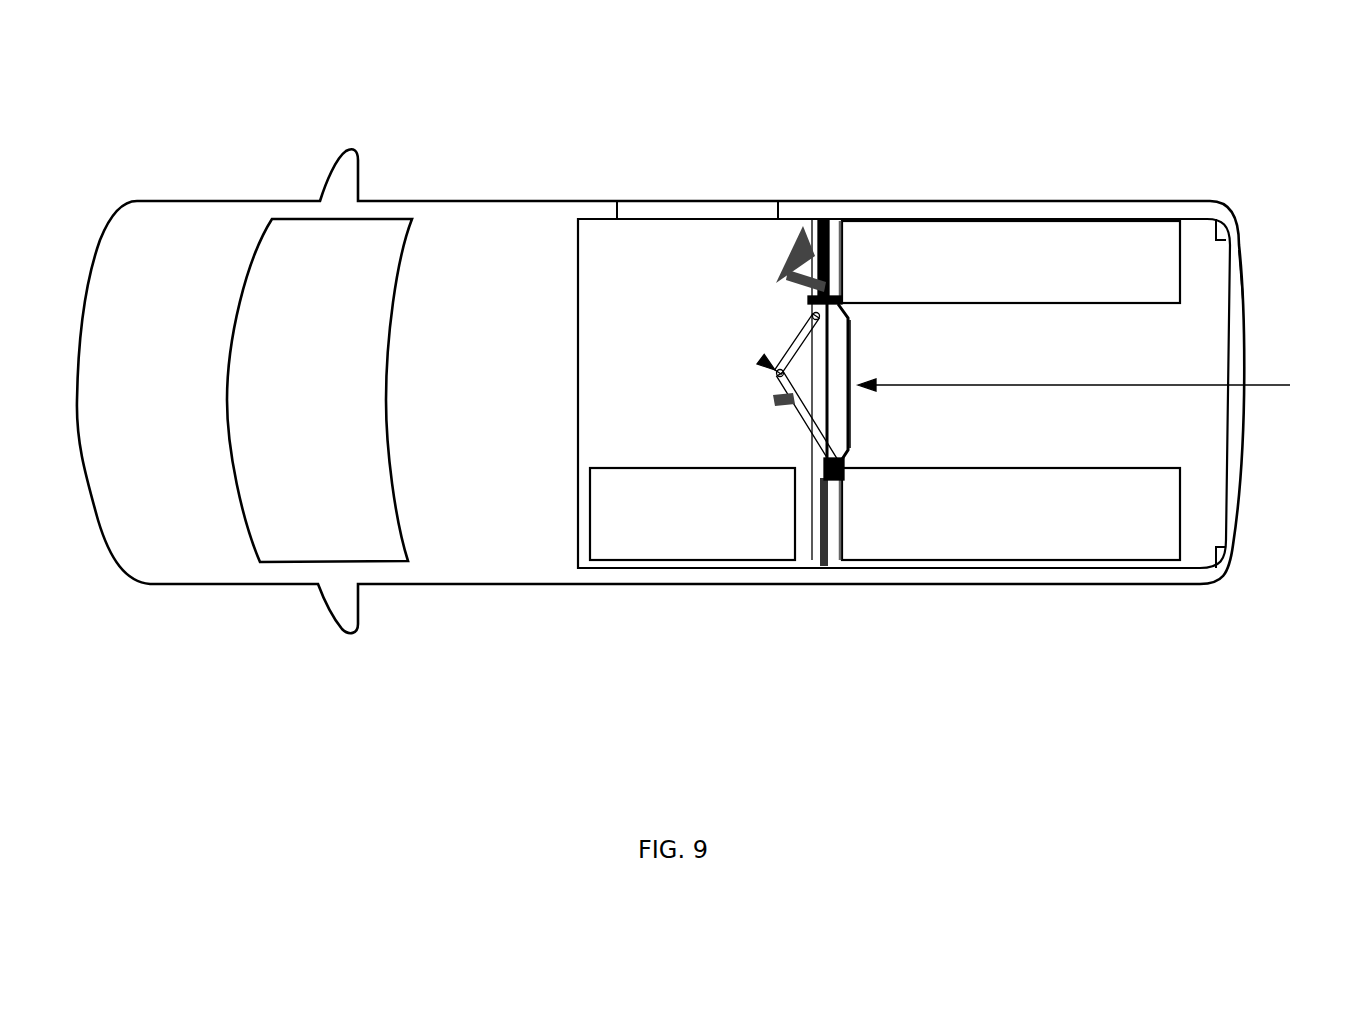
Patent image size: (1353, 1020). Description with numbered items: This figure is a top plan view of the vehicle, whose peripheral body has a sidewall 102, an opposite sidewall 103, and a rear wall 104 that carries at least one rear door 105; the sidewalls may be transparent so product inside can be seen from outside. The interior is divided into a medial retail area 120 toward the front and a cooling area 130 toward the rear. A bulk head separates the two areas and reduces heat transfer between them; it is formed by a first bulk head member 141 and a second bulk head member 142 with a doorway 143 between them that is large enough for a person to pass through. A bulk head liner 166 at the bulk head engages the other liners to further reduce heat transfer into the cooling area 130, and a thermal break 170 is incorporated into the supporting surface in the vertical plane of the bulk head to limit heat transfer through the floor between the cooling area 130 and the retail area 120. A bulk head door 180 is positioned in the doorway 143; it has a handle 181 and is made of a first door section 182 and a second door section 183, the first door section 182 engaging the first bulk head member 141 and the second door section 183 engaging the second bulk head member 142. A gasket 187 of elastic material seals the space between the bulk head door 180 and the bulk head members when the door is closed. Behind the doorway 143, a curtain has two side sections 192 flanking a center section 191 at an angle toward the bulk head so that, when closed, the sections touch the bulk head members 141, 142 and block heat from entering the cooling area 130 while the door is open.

The sidewall 102 is at (1140, 573).
The sidewall 103 is at (980, 215).
The rear wall 104 is at (1220, 212).
The rear door 105 is at (1238, 297).
The medial retail area 120 is at (653, 425).
The cooling area 130 is at (1005, 403).
The first bulk head member 141 is at (823, 472).
The second bulk head member 142 is at (814, 300).
The doorway 143 is at (1103, 384).
The bulk head liner 166 is at (828, 470).
The thermal break 170 is at (842, 307).
The bulk head door 180 is at (790, 365).
The handle 181 is at (782, 405).
The first door section 182 is at (809, 410).
The second door section 183 is at (805, 318).
The gasket 187 is at (838, 455).
The center section 191 is at (852, 357).
The side sections 192 is at (838, 465).